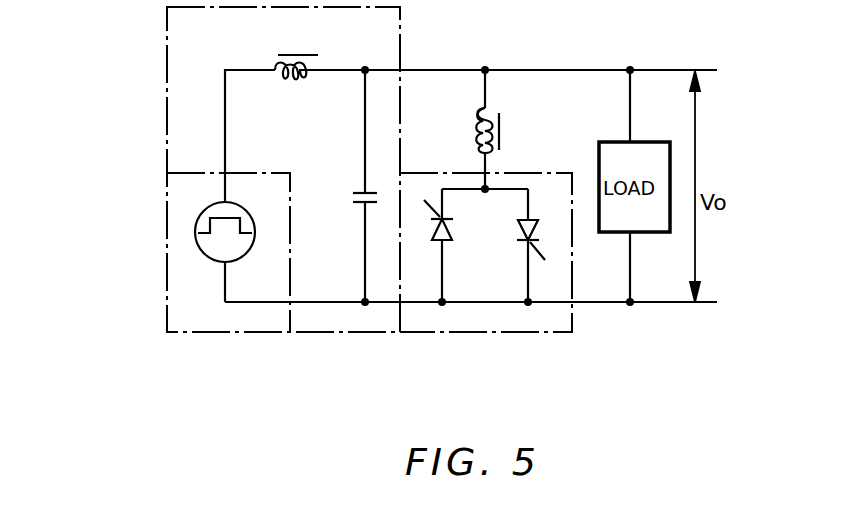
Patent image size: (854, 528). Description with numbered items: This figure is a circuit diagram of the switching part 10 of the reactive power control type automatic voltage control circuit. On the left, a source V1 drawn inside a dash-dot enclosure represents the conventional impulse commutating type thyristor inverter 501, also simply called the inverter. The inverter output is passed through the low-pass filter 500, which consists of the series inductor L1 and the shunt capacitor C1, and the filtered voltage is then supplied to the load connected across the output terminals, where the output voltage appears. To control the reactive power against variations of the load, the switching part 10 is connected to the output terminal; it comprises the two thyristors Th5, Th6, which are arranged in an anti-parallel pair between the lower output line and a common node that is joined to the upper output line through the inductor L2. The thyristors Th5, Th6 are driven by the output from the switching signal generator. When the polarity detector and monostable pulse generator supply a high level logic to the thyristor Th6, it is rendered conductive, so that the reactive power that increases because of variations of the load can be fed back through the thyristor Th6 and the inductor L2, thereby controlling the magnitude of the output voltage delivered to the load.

The low-pass filter 500 is at (320, 333).
The impulse commutating type thyristor inverter 501 is at (167, 258).
The switching part 10 is at (487, 333).
The inductor L1 is at (297, 53).
The inductor L2 is at (503, 129).
The capacitor C1 is at (347, 186).
The voltage source V1 is at (240, 232).
The thyristor Th5 is at (513, 245).
The thyristor Th6 is at (459, 245).